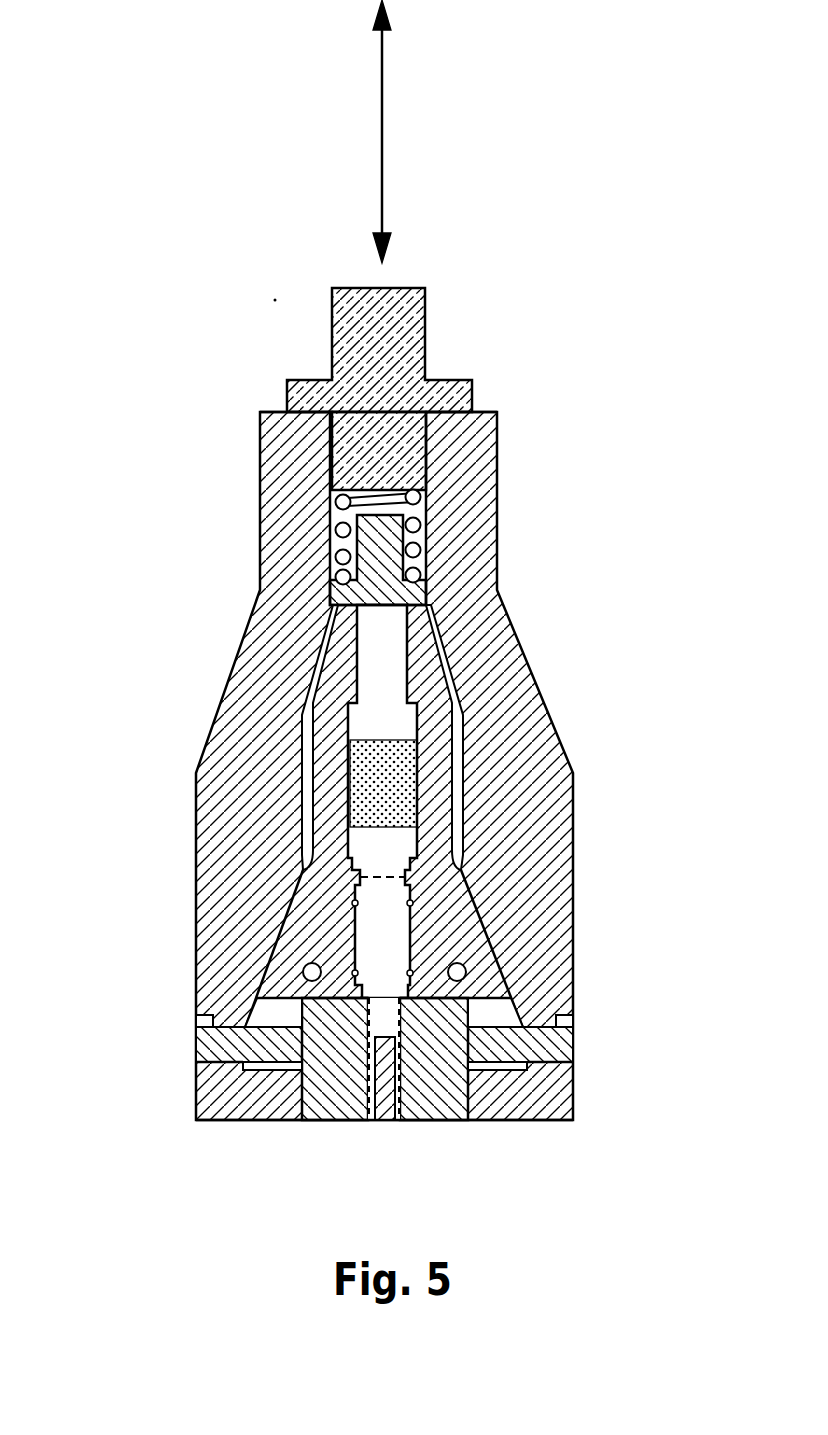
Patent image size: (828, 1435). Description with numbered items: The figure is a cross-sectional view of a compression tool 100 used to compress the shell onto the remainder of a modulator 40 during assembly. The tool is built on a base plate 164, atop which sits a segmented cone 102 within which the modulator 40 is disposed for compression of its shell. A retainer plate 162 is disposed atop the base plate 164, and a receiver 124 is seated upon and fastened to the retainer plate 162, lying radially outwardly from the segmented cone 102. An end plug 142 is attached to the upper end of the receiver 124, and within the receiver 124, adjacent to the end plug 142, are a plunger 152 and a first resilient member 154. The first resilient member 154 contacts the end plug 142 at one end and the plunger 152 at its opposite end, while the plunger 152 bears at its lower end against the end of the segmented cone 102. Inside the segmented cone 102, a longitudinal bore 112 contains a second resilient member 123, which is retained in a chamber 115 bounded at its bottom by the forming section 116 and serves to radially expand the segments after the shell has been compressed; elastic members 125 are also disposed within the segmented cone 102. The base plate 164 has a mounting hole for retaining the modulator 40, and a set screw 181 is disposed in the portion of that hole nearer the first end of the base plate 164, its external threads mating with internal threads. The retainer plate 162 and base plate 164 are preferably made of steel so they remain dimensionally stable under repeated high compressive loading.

The compression tool 100 is at (375, 610).
The segmented cone 102 is at (437, 747).
The longitudinal bore 112 is at (378, 635).
The chamber 115 is at (370, 727).
The forming section 116 is at (413, 928).
The second resilient member 123 is at (407, 813).
The receiver 124 is at (260, 476).
The elastic members 125 is at (462, 975).
The end plug 142 is at (458, 380).
The plunger 152 is at (430, 590).
The first resilient member 154 is at (430, 518).
The retainer plate 162 is at (573, 1050).
The base plate 164 is at (573, 1106).
The modulator 40 is at (372, 937).
The set screw 181 is at (392, 1077).